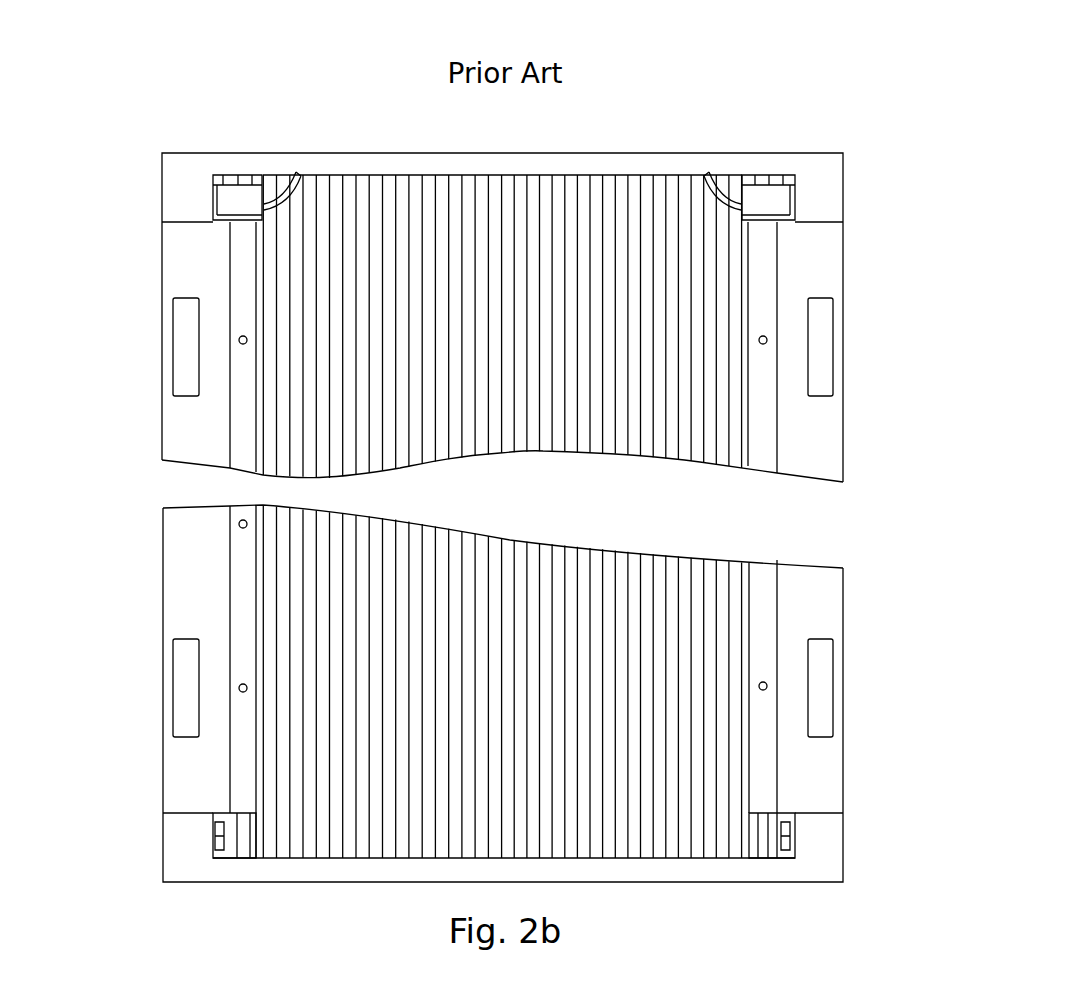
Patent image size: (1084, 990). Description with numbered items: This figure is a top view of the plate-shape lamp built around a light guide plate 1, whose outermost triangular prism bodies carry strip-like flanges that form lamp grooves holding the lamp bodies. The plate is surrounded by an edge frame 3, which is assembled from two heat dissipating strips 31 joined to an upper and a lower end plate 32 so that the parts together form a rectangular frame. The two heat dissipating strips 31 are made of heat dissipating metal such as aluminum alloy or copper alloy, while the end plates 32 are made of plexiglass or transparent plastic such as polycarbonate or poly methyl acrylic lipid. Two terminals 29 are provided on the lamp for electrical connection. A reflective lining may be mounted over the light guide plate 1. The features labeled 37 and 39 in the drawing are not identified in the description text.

The light guide plate 1 is at (735, 226).
The edge frame 3 is at (847, 386).
The terminal 29 is at (233, 202).
The heat dissipating strip 31 is at (818, 290).
The end plate 32 is at (475, 165).
The fixing hole 37 is at (228, 518).
The left mounting slot 39 is at (183, 350).